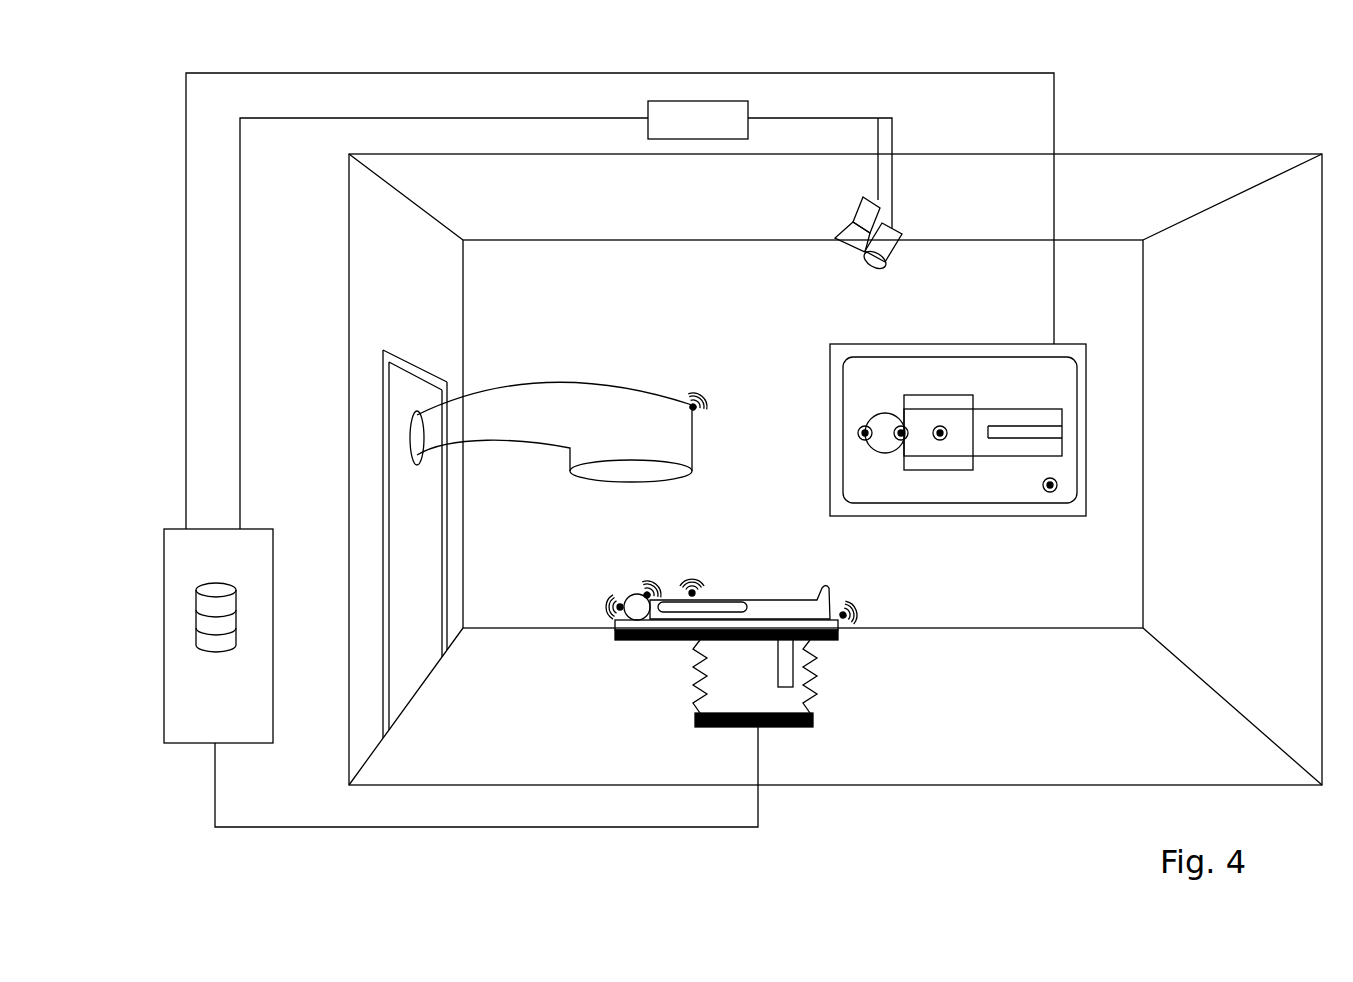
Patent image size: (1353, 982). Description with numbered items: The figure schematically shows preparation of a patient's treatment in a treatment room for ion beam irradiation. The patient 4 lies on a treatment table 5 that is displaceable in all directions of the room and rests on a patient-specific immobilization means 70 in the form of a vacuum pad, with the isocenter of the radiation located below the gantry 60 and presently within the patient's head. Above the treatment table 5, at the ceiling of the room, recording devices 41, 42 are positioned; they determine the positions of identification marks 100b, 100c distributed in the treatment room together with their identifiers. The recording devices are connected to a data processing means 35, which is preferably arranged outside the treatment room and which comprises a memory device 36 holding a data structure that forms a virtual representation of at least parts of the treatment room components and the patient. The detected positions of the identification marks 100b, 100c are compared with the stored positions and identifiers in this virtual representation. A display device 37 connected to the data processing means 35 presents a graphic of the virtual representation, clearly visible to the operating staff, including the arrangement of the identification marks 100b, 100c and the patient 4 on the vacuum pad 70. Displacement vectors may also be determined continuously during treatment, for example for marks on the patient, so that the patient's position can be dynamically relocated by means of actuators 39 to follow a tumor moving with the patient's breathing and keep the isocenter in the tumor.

The patient 4 is at (793, 600).
The treatment table 5 is at (840, 634).
The data processing means 35 is at (177, 695).
The memory device 36 is at (196, 598).
The display device 37 is at (1004, 497).
The actuators 39 is at (788, 675).
The recording device 41 is at (864, 212).
The camera 42 is at (894, 244).
The gantry 60 is at (572, 393).
The patient-specific immobilization means 70 is at (620, 626).
The identification marks 100b is at (698, 410).
The identification marks 100c is at (612, 600).